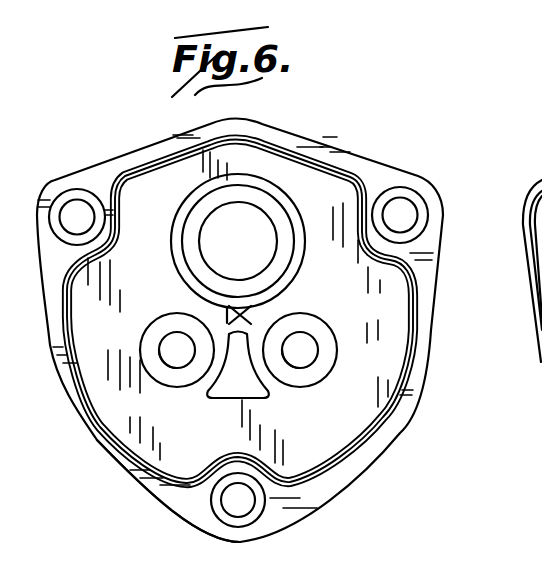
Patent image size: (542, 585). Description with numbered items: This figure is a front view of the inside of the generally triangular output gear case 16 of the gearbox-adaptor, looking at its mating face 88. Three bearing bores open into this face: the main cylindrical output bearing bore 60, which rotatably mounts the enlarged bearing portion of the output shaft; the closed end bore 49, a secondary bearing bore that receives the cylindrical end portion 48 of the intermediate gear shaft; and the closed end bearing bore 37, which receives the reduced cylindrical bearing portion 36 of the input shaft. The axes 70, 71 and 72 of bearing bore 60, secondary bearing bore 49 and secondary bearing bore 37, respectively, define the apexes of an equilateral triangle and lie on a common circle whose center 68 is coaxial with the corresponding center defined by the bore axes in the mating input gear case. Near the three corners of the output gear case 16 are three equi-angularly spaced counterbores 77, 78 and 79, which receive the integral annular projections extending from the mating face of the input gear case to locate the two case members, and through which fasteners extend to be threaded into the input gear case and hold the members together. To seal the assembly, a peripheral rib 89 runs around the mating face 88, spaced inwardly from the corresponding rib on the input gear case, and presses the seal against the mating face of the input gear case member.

The output gear case 16 is at (307, 135).
The reduced cylindrical bearing portion 36 is at (150, 350).
The closed end bearing bore 37 is at (180, 351).
The cylindrical end portion 48 is at (308, 346).
The closed end bore 49 is at (328, 358).
The main cylindrical output bearing bore 60 is at (238, 241).
The center 68 is at (250, 317).
The axis of bearing bore 60 70 is at (238, 241).
The axis of secondary bearing bore 49 71 is at (304, 357).
The axis of secondary bearing bore 37 72 is at (175, 350).
The counterbore 77 is at (80, 206).
The counterbore 78 is at (390, 200).
The counterbore 79 is at (242, 518).
The mating face 88 is at (197, 500).
The peripheral rib 89 is at (133, 453).